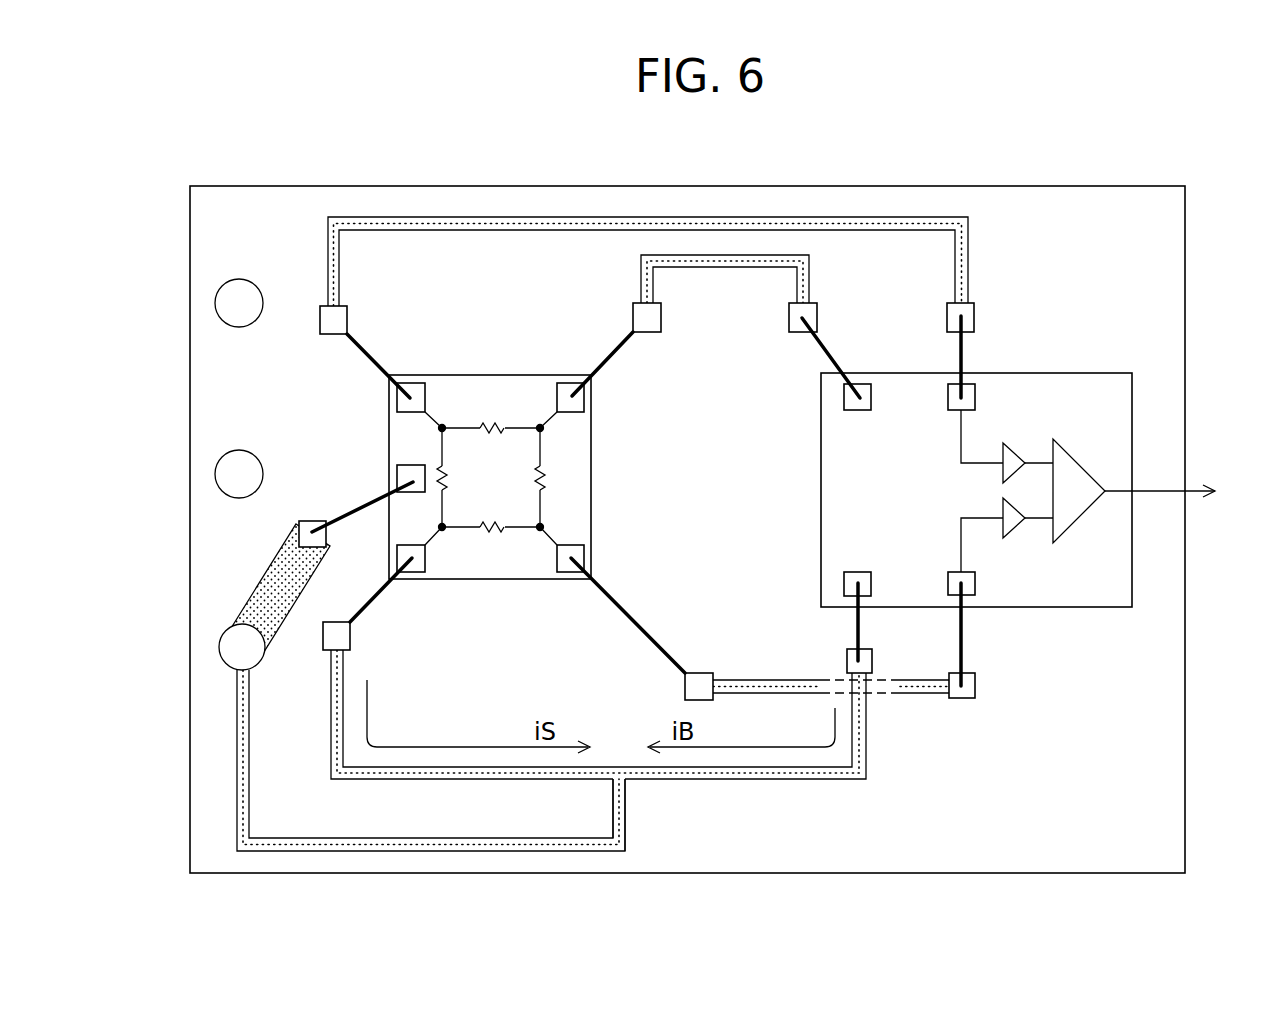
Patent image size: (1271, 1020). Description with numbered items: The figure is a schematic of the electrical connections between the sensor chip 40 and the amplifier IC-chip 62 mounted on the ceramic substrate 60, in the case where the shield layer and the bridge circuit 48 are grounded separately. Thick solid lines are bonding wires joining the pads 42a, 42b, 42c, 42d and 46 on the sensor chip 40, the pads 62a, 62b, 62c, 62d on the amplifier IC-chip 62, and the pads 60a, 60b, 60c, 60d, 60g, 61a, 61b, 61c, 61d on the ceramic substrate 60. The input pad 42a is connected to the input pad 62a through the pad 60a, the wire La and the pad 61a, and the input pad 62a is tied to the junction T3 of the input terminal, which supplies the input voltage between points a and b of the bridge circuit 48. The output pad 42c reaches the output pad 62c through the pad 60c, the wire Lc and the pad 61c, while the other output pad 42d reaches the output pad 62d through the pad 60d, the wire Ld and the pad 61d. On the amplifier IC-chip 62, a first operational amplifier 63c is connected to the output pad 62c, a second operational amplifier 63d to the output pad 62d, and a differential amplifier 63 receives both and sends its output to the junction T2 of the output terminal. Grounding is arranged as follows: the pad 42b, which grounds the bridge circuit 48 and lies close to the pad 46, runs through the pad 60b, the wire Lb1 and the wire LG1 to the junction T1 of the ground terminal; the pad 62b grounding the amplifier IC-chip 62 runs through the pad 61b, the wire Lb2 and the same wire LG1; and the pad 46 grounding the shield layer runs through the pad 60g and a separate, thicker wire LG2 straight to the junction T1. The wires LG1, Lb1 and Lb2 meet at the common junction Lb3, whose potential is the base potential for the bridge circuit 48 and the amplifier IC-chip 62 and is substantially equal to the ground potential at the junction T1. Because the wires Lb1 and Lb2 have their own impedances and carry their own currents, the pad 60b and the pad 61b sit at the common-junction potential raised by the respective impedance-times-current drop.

The sensor chip 40 is at (490, 372).
The input pad 42a is at (568, 383).
The pad for grounding the bridge circuit 42b is at (410, 572).
The output pad 42c is at (410, 383).
The output pad 42d is at (568, 572).
The pad for grounding the shield layer 46 is at (397, 478).
The bridge circuit 48 is at (565, 468).
The ceramic substrate 60 is at (1187, 292).
The pad 60a is at (661, 318).
The pad 60b is at (350, 636).
The pad 60c is at (347, 320).
The pad 60d is at (697, 673).
The pad 60g is at (299, 522).
The pad 61a is at (817, 318).
The pad 61b is at (872, 667).
The pad 61c is at (974, 318).
The pad 61d is at (967, 700).
The amplifier IC-chip 62 is at (1140, 395).
The input pad 62a is at (844, 397).
The pad for grounding the amplifier IC-chip 62b is at (844, 583).
The output pad 62c is at (975, 397).
The output pad 62d is at (975, 585).
The differential amplifier 63 is at (1085, 462).
The first operational amplifier 63c is at (1012, 447).
The second operational amplifier 63d is at (1010, 535).
The wire Lc is at (683, 217).
The wire La is at (763, 255).
The wire LG1 is at (412, 852).
The wire LG2 is at (258, 586).
The wire Lb1 is at (505, 779).
The wire Lb2 is at (782, 773).
The common junction Lb3 is at (623, 782).
The wiring line Ld is at (925, 693).
The junction of the ground terminal T1 is at (219, 648).
The junction of the output terminal T2 is at (215, 476).
The junction of the input terminal T3 is at (215, 304).